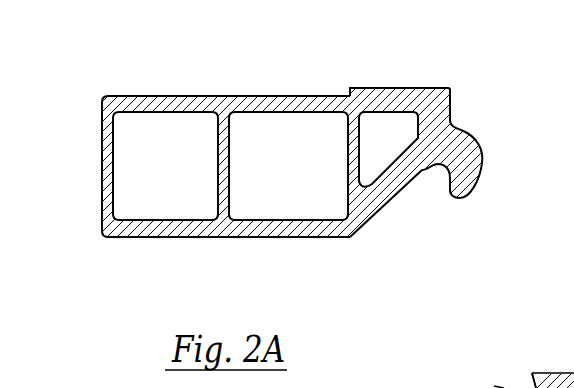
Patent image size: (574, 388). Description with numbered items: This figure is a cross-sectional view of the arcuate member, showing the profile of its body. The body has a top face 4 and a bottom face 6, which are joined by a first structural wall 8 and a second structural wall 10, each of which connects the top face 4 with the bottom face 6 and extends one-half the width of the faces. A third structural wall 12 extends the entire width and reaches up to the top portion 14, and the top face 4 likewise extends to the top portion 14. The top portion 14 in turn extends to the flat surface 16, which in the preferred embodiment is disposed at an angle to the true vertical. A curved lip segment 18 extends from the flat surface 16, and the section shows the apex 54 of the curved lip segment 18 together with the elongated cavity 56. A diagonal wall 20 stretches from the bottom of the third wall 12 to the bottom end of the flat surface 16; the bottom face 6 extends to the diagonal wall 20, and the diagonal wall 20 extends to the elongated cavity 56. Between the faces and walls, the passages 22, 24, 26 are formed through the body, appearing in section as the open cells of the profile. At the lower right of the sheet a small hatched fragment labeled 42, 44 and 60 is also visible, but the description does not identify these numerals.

The top face 4 is at (237, 97).
The bottom face 6 is at (168, 236).
The first structural wall 8 is at (105, 163).
The second structural wall 10 is at (217, 160).
The third structural wall 12 is at (348, 157).
The top portion 14 is at (403, 88).
The flat surface 16 is at (452, 105).
The curved lip segment 18 is at (482, 163).
The diagonal wall 20 is at (377, 210).
The passage 22 is at (143, 188).
The passage 24 is at (290, 196).
The passage 26 is at (396, 132).
The apex 54 is at (450, 200).
The elongated cavity 56 is at (430, 176).
The mating member 42 is at (564, 371).
The mating member edge 44 is at (534, 387).
The mating member portion 60 is at (500, 387).